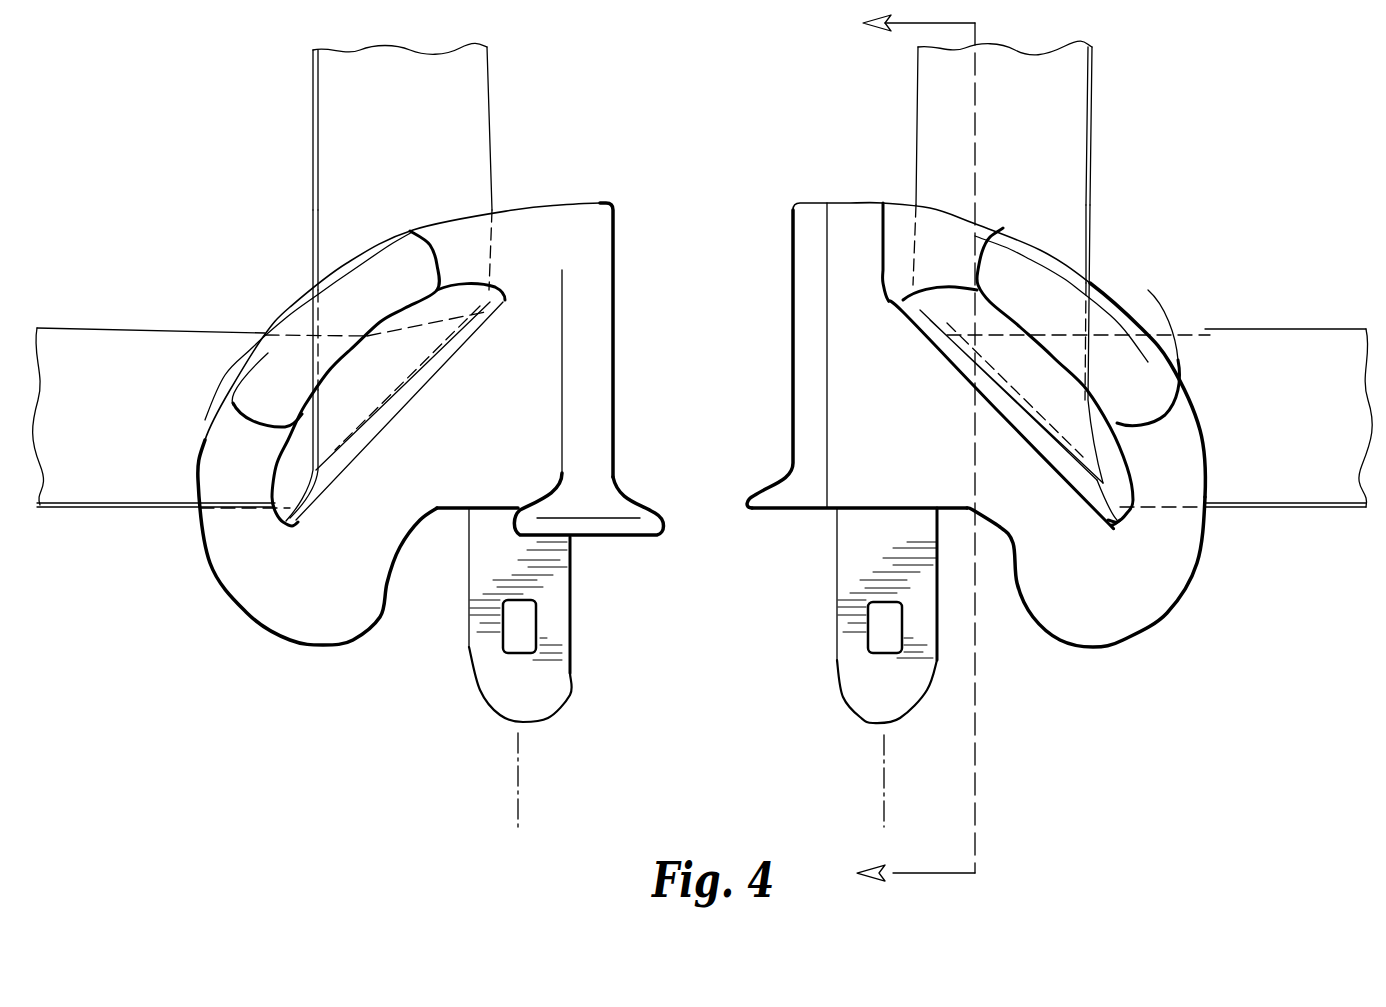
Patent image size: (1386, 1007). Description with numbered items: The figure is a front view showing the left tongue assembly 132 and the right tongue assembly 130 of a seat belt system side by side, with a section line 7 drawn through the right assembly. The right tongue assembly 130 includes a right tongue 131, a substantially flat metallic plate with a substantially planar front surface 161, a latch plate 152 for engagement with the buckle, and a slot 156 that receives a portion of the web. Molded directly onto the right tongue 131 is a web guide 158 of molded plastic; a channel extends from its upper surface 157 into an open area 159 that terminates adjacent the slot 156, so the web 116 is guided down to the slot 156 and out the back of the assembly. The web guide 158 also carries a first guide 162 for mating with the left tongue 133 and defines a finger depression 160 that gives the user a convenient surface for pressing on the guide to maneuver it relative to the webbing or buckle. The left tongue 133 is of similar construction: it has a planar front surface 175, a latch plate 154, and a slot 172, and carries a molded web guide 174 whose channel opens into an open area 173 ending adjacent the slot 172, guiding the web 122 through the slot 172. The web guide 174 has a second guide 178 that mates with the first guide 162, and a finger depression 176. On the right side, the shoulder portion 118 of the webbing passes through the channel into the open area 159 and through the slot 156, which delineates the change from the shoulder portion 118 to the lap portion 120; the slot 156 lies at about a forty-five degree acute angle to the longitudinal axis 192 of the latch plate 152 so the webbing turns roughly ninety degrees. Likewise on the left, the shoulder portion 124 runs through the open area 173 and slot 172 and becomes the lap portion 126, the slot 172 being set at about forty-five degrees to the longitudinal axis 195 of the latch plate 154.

The section line 7- 7 is at (906, 451).
The web 116 is at (1063, 202).
The shoulder portion 118 is at (1065, 103).
The lap portion 120 is at (1307, 485).
The web 122 is at (327, 222).
The shoulder portion 124 is at (457, 130).
The lap portion 126 is at (103, 468).
The right tongue assembly 130 is at (1125, 283).
The right tongue 131 is at (850, 530).
The left tongue assembly 132 is at (268, 285).
The left tongue 133 is at (558, 582).
The latch plate 152 is at (847, 710).
The latch plate 154 is at (493, 708).
The slot 156 is at (1122, 518).
The upper surface 157 is at (897, 205).
The web guide 158 is at (1204, 541).
The open area 159 is at (1093, 467).
The finger depression 160 is at (1156, 373).
The front surface 161 is at (847, 570).
The first guide 162 is at (793, 268).
The slot 172 is at (283, 517).
The open area 173 is at (335, 418).
The web guide 174 is at (327, 648).
The front surface 175 is at (487, 562).
The finger depression 176 is at (250, 372).
The second guide 178 is at (617, 497).
The longitudinal axis 192 is at (880, 805).
The longitudinal axis 195 is at (517, 807).